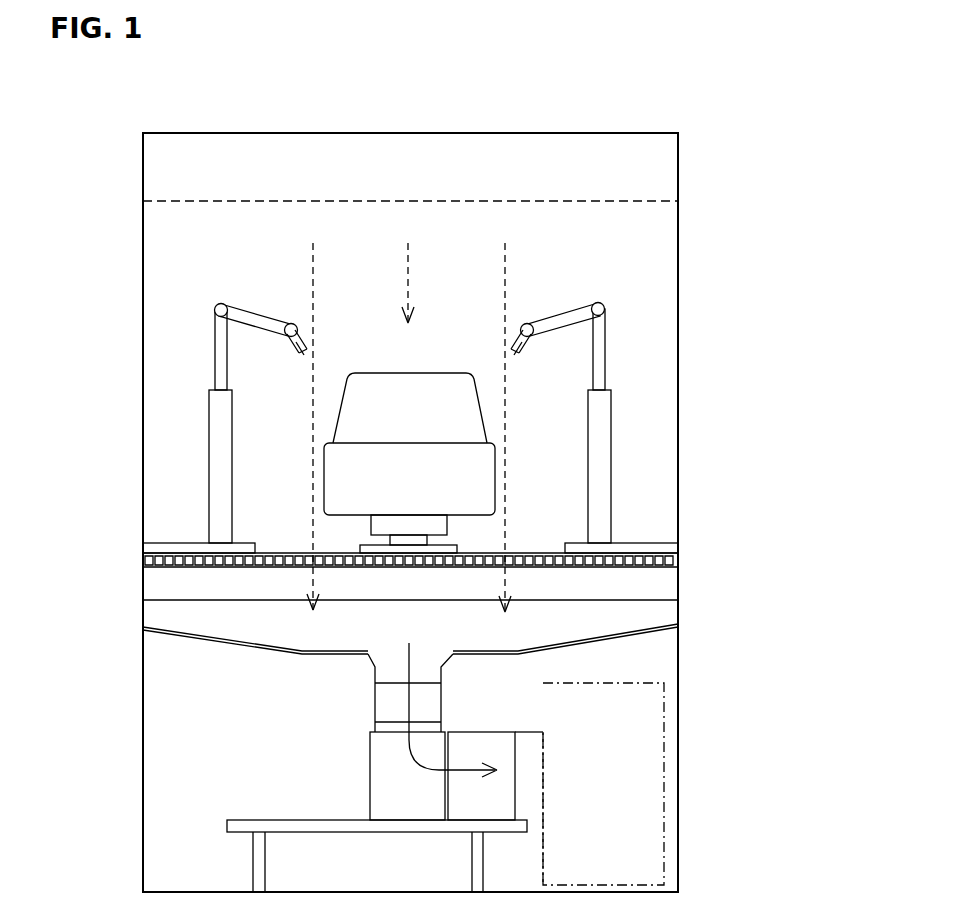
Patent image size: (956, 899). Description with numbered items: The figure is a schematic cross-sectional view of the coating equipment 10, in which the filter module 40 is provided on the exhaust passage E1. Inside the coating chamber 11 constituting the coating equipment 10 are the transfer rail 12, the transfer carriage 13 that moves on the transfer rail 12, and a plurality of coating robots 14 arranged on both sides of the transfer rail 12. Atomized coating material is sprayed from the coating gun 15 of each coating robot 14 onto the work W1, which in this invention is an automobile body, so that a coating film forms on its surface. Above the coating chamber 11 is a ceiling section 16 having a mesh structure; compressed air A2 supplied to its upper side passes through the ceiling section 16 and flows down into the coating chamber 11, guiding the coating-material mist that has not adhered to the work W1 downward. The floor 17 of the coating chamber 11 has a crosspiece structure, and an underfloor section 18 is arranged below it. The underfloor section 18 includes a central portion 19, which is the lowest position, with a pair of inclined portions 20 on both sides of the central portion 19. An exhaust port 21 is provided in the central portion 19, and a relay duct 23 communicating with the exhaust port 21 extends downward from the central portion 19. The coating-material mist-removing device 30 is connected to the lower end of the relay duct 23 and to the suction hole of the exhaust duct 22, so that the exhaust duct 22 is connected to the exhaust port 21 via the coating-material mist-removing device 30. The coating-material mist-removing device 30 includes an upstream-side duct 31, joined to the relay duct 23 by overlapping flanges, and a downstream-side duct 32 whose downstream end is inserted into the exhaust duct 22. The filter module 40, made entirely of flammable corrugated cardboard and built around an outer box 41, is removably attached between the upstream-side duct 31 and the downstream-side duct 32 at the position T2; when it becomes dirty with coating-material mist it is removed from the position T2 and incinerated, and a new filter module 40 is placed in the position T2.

The coating equipment 10 is at (681, 97).
The coating chamber 11 is at (672, 262).
The transfer rail 12 is at (448, 549).
The transfer carriage 13 is at (415, 523).
The coating robot 14 is at (218, 357).
The coating gun 15 is at (310, 348).
The ceiling section 16 is at (566, 200).
The floor 17 is at (288, 556).
The underfloor section 18 is at (410, 651).
The central portion 19 is at (480, 650).
The inclined plates 20 is at (268, 647).
The exhaust port 21 is at (389, 650).
The exhaust duct 22 is at (679, 724).
The relay duct 23 is at (388, 696).
The coating-material mist-removing device 30 is at (448, 759).
The upstream-side duct 31 is at (392, 722).
The downstream-side duct 32 is at (505, 748).
The filter module 40 is at (407, 805).
The outer box 41 is at (377, 848).
The air A2 is at (310, 283).
The work W1 is at (432, 383).
The exhaust passage E1 is at (410, 702).
The position T2 is at (383, 812).